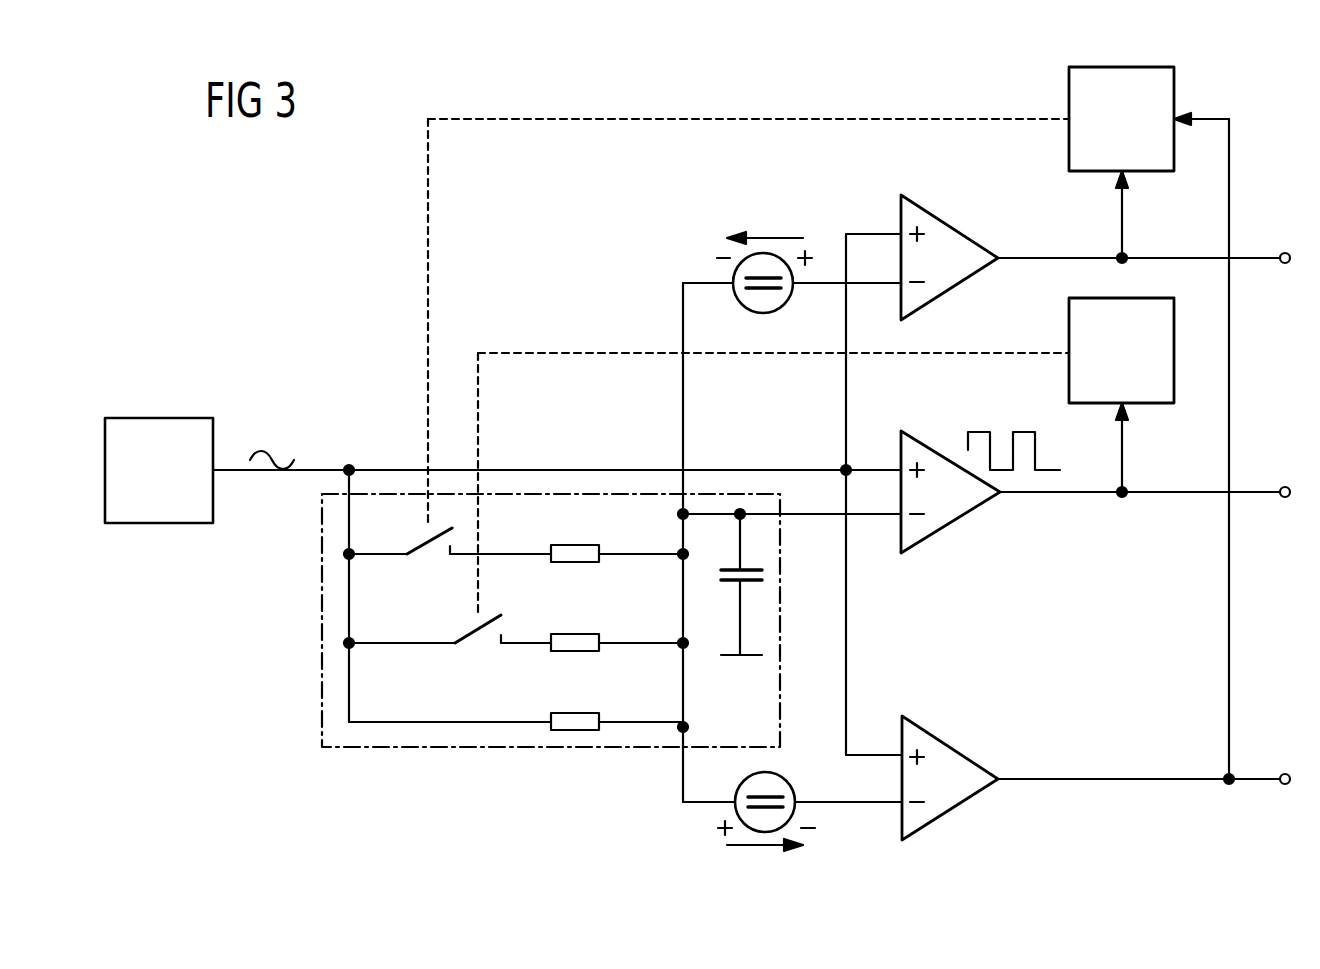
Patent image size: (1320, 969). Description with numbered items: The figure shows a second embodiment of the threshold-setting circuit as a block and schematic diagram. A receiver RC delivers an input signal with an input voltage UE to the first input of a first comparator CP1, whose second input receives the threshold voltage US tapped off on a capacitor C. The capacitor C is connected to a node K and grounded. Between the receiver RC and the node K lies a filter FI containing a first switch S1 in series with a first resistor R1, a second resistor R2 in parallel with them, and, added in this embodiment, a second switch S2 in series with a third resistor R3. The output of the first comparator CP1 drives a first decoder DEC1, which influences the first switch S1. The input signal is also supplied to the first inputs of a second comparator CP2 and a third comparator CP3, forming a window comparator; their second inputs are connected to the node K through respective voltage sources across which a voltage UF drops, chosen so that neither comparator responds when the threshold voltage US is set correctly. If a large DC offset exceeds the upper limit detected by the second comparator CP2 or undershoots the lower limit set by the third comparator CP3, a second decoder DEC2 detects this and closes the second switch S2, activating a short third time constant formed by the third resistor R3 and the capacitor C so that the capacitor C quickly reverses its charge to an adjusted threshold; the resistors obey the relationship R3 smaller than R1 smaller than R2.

The receiver RC is at (160, 418).
The filter FI is at (452, 827).
The first switch S1 is at (471, 638).
The second switch S2 is at (421, 548).
The first resistor R1 is at (565, 652).
The second resistor R2 is at (572, 713).
The third resistor R3 is at (567, 563).
The capacitor C is at (735, 582).
The node K is at (683, 596).
The input voltage UE is at (768, 468).
The threshold voltage US is at (821, 515).
The voltage across voltage source UF is at (792, 543).
The first comparator CP1 is at (950, 522).
The second comparator CP2 is at (952, 227).
The third comparator CP3 is at (950, 809).
The first decoder DEC1 is at (826, 395).
The second decoder DEC2 is at (828, 162).